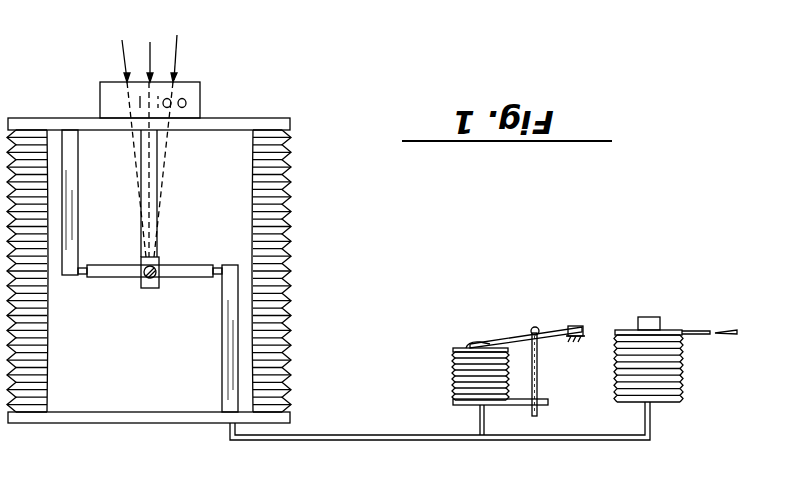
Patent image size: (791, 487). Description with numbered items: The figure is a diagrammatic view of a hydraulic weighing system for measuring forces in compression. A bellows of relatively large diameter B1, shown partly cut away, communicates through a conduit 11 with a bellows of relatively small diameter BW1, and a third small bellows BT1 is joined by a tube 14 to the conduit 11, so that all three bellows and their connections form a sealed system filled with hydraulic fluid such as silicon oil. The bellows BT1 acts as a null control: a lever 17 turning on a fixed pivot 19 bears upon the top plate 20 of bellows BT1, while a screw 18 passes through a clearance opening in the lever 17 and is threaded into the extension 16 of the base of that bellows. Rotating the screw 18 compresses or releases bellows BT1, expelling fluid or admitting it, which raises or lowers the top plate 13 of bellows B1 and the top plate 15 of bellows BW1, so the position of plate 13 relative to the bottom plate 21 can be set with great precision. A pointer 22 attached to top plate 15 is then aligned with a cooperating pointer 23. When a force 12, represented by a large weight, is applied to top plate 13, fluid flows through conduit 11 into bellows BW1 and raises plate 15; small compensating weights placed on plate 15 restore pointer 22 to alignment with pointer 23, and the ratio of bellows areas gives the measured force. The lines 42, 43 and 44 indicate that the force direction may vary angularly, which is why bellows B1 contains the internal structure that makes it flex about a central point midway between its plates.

The conduit 11 is at (382, 440).
The force 12 is at (203, 97).
The top plate 13 is at (267, 117).
The tube 14 is at (485, 423).
The top plate 15 is at (669, 330).
The extension 16 is at (548, 402).
The lever 17 is at (520, 333).
The screw 18 is at (538, 372).
The fixed pivot 19 is at (577, 328).
The top plate 20 is at (460, 347).
The bottom plate 21 is at (45, 424).
The pointer 22 is at (697, 330).
The cooperating pointer 23 is at (729, 329).
The force direction line 42 is at (124, 57).
The force direction line 43 is at (150, 42).
The force direction line 44 is at (176, 63).
The large-diameter bellows B1 is at (292, 280).
The position control bellows BT1 is at (455, 389).
The small-diameter bellows BW1 is at (681, 370).